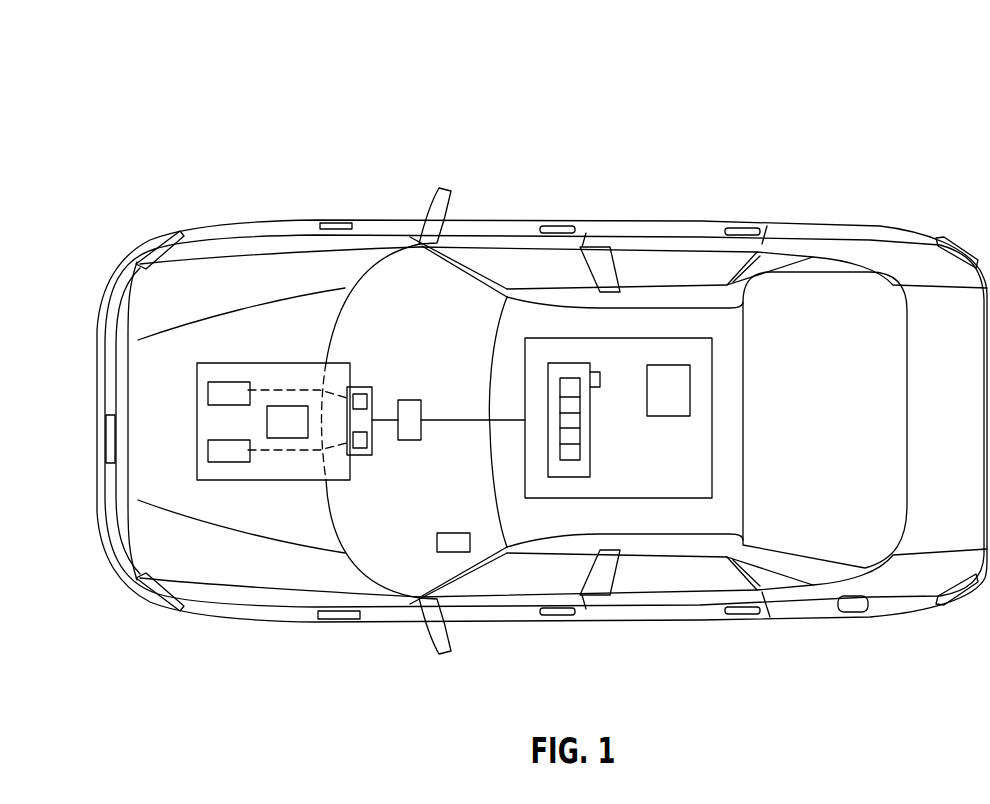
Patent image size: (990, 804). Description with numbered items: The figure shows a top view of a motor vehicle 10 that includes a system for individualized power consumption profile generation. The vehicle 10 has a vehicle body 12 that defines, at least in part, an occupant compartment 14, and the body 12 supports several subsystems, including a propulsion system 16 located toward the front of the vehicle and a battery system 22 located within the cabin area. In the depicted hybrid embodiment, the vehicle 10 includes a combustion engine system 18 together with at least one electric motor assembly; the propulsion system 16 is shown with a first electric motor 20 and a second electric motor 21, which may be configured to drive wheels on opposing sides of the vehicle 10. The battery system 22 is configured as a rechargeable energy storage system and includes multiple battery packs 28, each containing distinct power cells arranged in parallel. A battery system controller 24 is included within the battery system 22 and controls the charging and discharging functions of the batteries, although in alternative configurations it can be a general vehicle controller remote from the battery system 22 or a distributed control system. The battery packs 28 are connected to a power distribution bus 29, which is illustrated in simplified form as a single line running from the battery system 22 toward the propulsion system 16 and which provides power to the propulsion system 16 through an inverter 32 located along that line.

The motor vehicle 10 is at (62, 90).
The vehicle body 12 is at (604, 208).
The occupant compartment 14 is at (689, 538).
The propulsion system 16 is at (197, 425).
The combustion engine system 18 is at (275, 406).
The first electric motor 20 is at (231, 382).
The second electric motor 21 is at (227, 462).
The battery system 22 is at (572, 498).
The battery system controller 24 is at (690, 392).
The battery packs 28 is at (582, 437).
The power distribution bus 29 is at (473, 425).
The inverter 32 is at (408, 400).